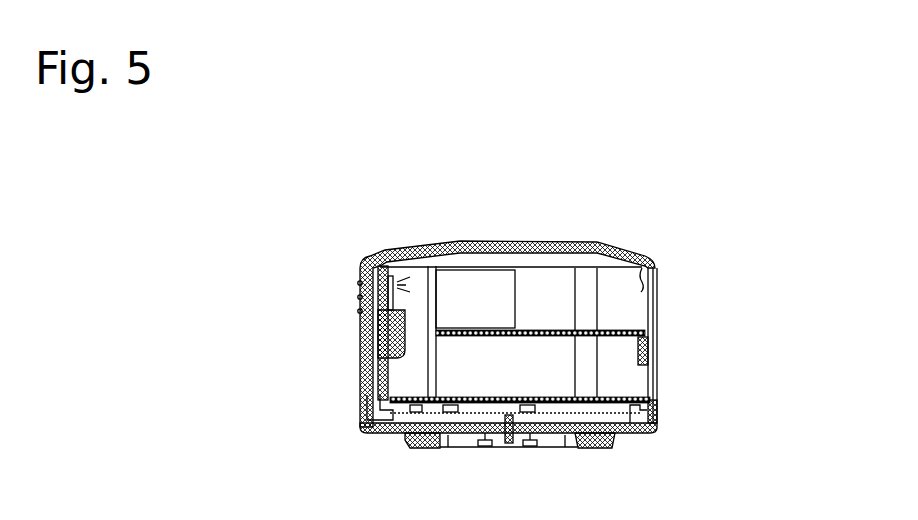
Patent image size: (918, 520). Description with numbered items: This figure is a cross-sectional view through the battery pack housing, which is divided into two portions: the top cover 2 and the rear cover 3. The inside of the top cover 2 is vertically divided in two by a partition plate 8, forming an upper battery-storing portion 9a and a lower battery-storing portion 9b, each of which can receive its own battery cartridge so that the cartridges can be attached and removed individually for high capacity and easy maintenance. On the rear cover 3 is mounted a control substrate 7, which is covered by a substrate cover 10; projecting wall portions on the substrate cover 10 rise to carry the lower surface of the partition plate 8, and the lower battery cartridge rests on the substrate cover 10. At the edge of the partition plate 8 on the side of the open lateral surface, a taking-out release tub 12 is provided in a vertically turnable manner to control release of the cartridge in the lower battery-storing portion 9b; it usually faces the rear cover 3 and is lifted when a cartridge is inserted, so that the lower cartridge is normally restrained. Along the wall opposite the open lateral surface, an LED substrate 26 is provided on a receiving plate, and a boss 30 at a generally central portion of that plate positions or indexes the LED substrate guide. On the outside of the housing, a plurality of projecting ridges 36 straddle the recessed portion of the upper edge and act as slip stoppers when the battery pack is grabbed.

The top cover 2 is at (600, 245).
The rear cover 3 is at (378, 435).
The control substrate 7 is at (628, 425).
The partition plate 8 is at (610, 330).
The battery-storing portion 9a is at (562, 309).
The battery-storing portion 9b is at (562, 380).
The substrate cover 10 is at (625, 399).
The taking-out release tub 12 is at (650, 352).
The LED substrate 26 is at (408, 282).
The boss 30 is at (362, 346).
The projecting ridges 36 is at (362, 290).